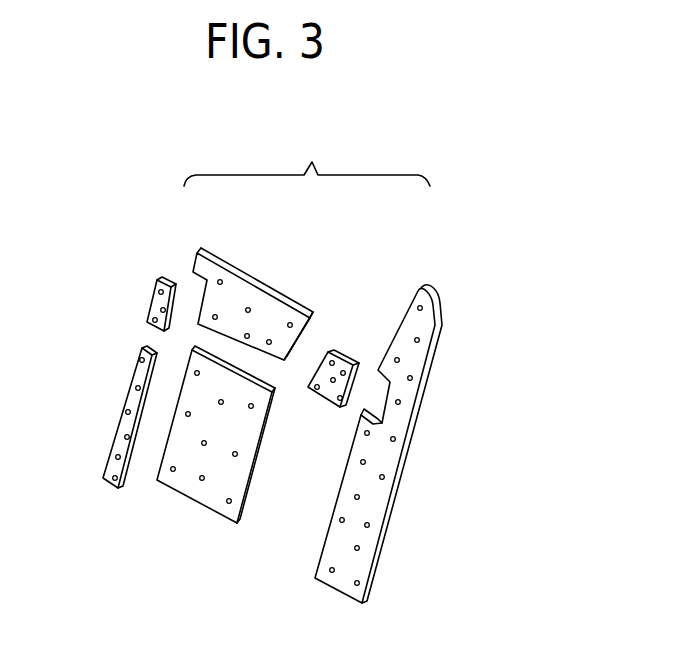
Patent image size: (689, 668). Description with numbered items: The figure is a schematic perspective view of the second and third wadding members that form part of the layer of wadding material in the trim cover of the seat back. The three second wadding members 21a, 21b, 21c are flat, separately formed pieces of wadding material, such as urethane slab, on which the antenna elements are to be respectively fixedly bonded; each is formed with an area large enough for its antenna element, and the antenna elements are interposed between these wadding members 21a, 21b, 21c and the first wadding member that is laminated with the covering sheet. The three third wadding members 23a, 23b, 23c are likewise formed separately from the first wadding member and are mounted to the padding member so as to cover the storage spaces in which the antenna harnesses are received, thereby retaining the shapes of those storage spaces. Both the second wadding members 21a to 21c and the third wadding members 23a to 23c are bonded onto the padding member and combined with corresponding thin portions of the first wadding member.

The second wadding member 21a is at (268, 280).
The second wadding member 21b is at (192, 481).
The second wadding member 21c is at (385, 452).
The third wadding member 23a is at (155, 294).
The third wadding member 23b is at (129, 392).
The third wadding member 23c is at (348, 351).